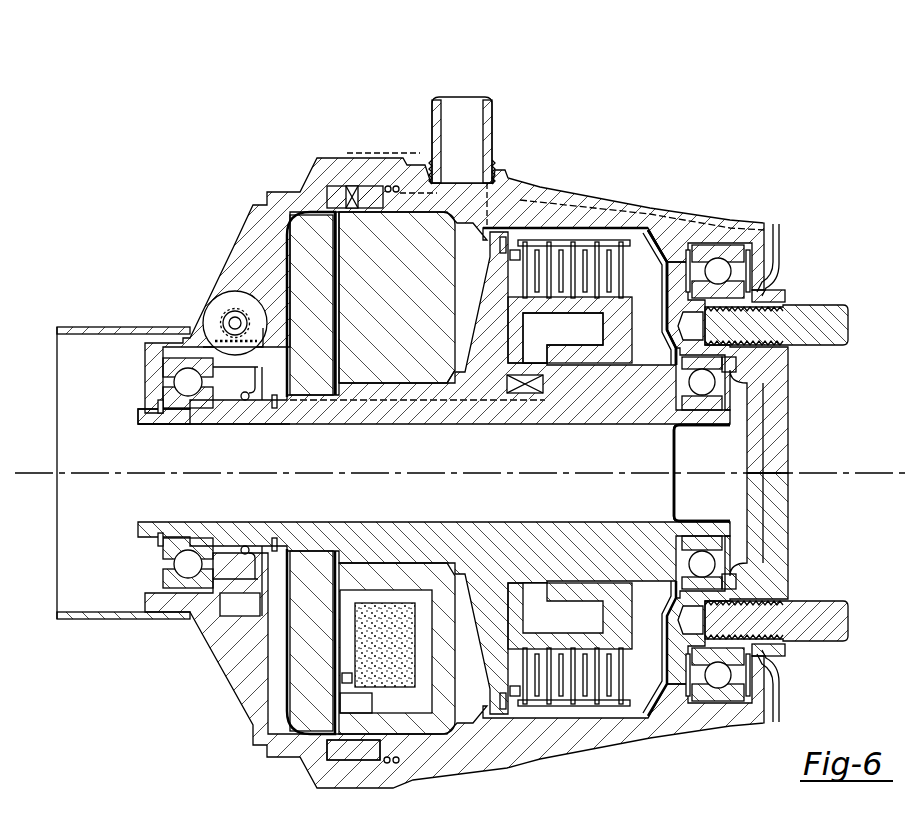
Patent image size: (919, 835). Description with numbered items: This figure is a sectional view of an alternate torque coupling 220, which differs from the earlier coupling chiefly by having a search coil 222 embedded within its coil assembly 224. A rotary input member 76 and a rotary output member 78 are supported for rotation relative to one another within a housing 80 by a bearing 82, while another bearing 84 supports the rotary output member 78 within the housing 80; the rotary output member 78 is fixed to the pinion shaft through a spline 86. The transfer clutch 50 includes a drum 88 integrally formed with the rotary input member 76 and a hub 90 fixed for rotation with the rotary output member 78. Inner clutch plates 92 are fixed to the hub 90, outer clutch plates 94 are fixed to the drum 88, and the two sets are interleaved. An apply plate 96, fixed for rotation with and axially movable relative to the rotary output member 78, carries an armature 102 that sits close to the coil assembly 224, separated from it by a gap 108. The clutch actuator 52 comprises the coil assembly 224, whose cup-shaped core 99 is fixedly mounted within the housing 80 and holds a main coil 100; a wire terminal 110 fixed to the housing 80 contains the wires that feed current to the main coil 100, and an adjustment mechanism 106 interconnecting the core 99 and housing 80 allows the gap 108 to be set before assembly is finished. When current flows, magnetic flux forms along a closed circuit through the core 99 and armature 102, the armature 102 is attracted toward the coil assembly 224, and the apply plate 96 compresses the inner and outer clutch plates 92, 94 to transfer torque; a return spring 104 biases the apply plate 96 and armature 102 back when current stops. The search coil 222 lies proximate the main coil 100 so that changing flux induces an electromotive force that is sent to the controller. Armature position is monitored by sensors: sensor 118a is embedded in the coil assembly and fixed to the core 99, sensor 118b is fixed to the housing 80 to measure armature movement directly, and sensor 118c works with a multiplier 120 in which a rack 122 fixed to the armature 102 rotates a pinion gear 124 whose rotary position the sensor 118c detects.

The torque coupling 220 is at (320, 132).
The clutch actuator 52 is at (314, 188).
The housing 80 is at (528, 193).
The adjustment mechanism 106 is at (368, 196).
The wire terminal 110 is at (492, 106).
The drum 88 is at (573, 237).
The transfer clutch 50 is at (611, 226).
The hub 90 is at (652, 270).
The multiplier 120 is at (258, 286).
The pinion gear 124 is at (233, 308).
The position sensor 118c is at (221, 313).
The gap 108 is at (298, 252).
The rack 122 is at (268, 331).
The apply plate 96 is at (481, 314).
The coil assembly 224 is at (448, 381).
The armature 102 is at (304, 388).
The spline 86 is at (240, 428).
The rotary output member 78 is at (145, 414).
The bearing 84 is at (161, 361).
The return spring 104 is at (528, 390).
The outer clutch plates 94 is at (588, 287).
The inner clutch plates 92 is at (613, 290).
The rotary input member 76 is at (783, 368).
The bearing 82 is at (763, 365).
The position sensor 118b is at (240, 600).
The main coil 100 is at (393, 605).
The search coil 222 is at (342, 678).
The position sensor 118a is at (353, 706).
The core 99 is at (428, 728).